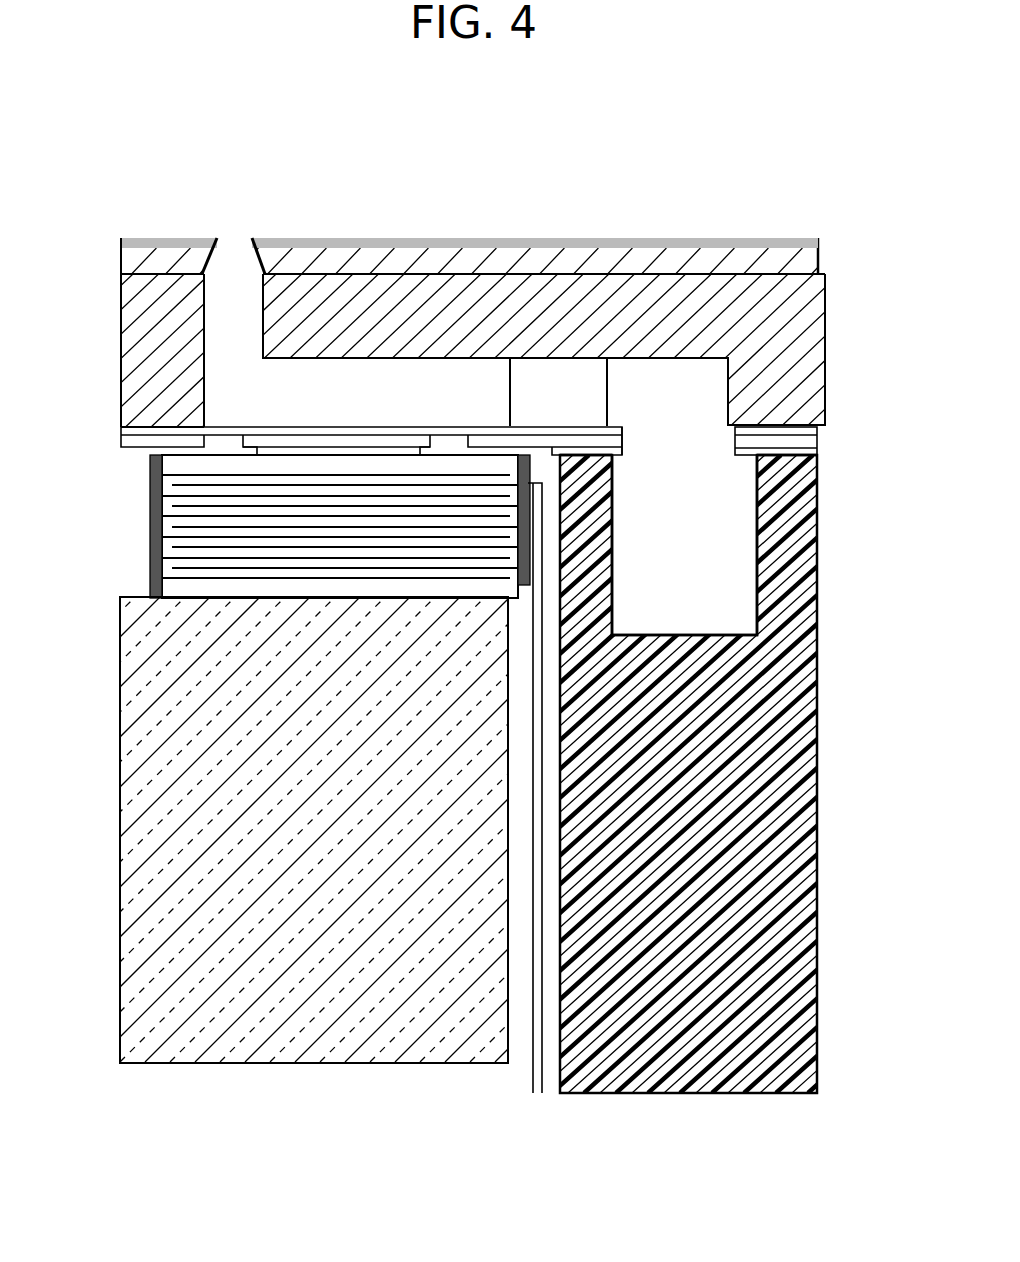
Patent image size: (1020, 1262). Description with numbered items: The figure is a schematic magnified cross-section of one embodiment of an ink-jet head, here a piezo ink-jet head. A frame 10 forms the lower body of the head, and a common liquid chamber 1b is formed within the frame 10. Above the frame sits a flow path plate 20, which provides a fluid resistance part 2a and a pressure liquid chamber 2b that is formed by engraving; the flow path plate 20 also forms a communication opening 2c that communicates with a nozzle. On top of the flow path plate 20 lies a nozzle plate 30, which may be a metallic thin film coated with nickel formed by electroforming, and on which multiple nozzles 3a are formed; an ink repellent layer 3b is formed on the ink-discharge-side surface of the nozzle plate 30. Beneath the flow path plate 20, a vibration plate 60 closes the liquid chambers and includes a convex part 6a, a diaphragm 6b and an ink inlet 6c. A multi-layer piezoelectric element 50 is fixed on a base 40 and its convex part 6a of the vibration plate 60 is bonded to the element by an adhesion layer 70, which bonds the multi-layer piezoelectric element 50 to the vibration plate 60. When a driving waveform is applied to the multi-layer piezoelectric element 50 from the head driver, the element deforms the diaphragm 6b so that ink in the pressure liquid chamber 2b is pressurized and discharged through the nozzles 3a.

The frame 10 is at (510, 774).
The common liquid chamber 1b is at (702, 597).
The flow path plate 20 is at (483, 302).
The fluid resistance part 2a is at (572, 380).
The pressure liquid chamber 2b is at (358, 380).
The communication opening 2c is at (233, 335).
The nozzle plate 30 is at (507, 226).
The nozzles 3a is at (240, 238).
The ink repellent layer 3b is at (165, 236).
The base 40 is at (128, 767).
The multi-layer piezoelectric element 50 is at (168, 524).
The vibration plate 60 is at (465, 463).
The convex part 6a is at (380, 438).
The diaphragm 6b is at (227, 433).
The ink inlet 6c is at (695, 460).
The adhesion layer 70 is at (785, 457).